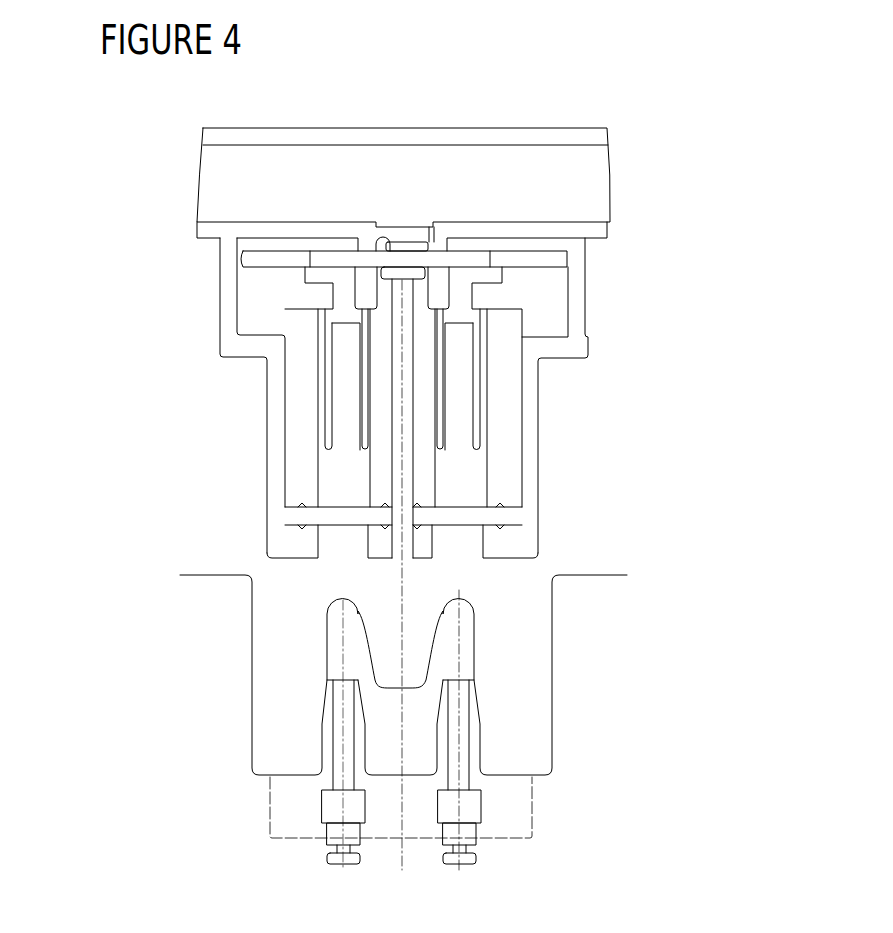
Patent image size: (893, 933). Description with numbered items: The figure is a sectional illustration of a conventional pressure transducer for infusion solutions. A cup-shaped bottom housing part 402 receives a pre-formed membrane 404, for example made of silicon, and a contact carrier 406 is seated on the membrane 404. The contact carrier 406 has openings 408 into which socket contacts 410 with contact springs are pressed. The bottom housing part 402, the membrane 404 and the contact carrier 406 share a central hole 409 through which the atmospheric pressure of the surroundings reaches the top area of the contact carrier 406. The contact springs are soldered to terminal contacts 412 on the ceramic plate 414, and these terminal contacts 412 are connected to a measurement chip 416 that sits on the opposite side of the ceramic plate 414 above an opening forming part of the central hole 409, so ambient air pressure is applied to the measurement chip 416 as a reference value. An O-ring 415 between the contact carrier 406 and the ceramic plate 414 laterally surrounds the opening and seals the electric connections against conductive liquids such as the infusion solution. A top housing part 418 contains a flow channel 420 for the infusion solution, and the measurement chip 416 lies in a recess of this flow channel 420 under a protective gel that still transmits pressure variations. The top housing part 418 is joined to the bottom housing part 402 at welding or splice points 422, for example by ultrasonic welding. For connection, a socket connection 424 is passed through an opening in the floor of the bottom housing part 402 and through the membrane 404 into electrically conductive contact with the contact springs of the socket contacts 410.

The bottom housing part 402 is at (531, 428).
The membrane 404 is at (322, 518).
The contact carrier 406 is at (510, 328).
The openings 408 is at (335, 483).
The central hole 409 is at (406, 543).
The socket contacts 410 is at (322, 417).
The terminal contacts 412 is at (313, 263).
The ceramic plate 414 is at (547, 263).
The O-ring 415 is at (392, 272).
The measurement chip 416 is at (420, 243).
The top housing part 418 is at (562, 228).
The flow channel 420 is at (347, 177).
The welding or splice points 422 is at (220, 317).
The socket connection 424 is at (403, 722).